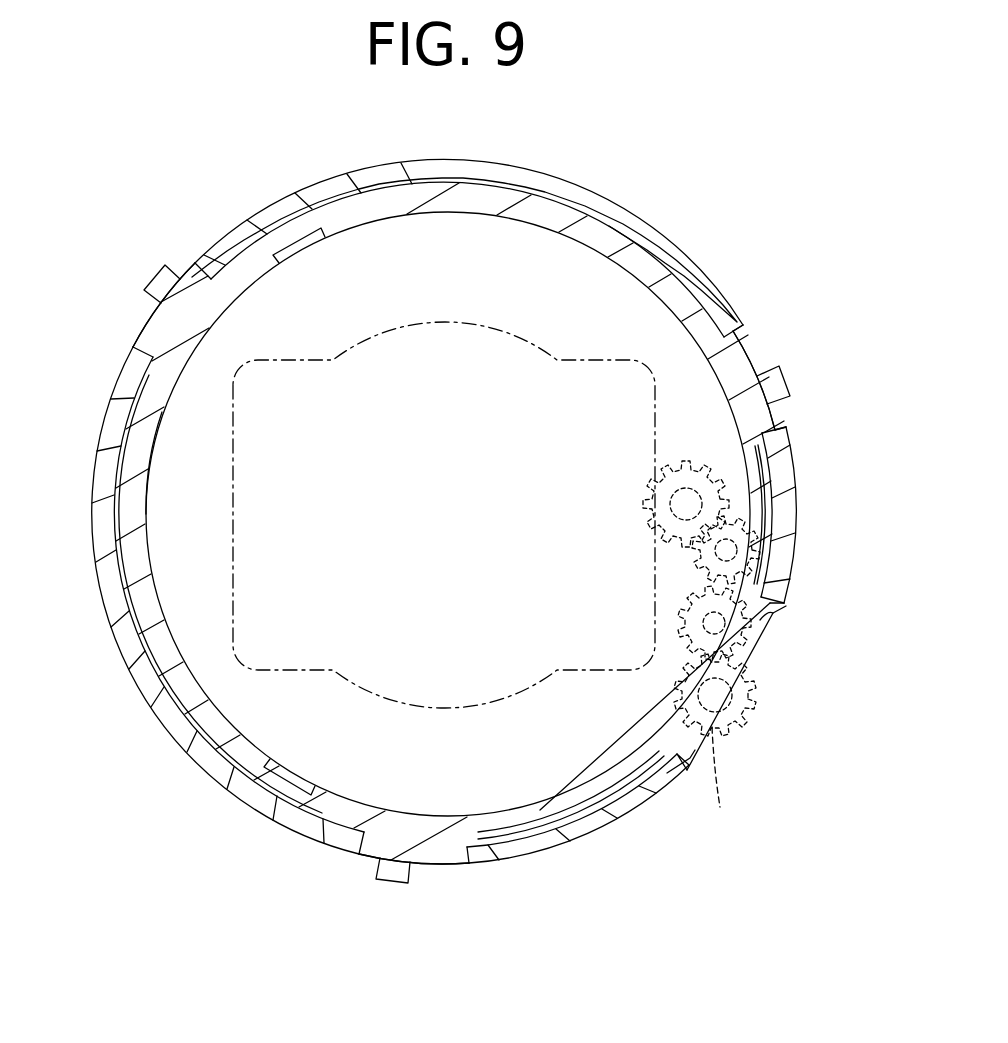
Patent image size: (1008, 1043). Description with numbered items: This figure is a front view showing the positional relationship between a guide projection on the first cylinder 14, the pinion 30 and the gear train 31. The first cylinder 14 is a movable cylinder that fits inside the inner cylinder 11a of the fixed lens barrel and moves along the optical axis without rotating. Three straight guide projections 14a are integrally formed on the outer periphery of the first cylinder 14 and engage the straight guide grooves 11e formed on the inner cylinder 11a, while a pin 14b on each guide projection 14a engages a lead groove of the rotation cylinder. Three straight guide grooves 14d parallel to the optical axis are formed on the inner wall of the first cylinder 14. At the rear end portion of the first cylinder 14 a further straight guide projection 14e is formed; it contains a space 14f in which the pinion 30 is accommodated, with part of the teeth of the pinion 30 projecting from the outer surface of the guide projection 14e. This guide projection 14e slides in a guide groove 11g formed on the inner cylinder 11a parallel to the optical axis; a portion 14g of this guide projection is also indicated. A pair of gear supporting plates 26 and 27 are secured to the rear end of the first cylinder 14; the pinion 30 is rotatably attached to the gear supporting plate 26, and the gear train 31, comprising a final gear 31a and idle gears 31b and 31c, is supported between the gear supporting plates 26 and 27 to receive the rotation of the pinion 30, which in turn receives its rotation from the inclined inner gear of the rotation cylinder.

The first cylinder 14 is at (490, 195).
The straight guide projection 14a is at (155, 335).
The pin 14b is at (163, 283).
The straight guide groove 14d is at (302, 250).
The straight guide projection 14e is at (765, 648).
The space 14f is at (665, 712).
The engaging portion 14g is at (712, 765).
The inner cylinder 11a is at (100, 560).
The straight guide groove 11e is at (140, 345).
The guide groove 11g is at (707, 752).
The gear supporting plate 26 is at (185, 605).
The gear supporting plate 27 is at (154, 463).
The pinion 30 is at (752, 727).
The gear train 31 is at (779, 560).
The final gear 31a is at (728, 480).
The idle gear 31b is at (745, 530).
The idle gear 31c is at (768, 617).